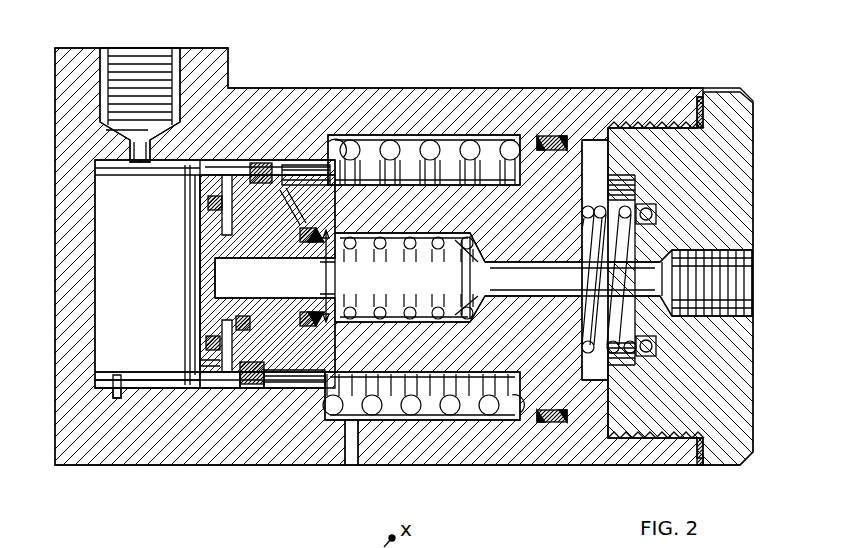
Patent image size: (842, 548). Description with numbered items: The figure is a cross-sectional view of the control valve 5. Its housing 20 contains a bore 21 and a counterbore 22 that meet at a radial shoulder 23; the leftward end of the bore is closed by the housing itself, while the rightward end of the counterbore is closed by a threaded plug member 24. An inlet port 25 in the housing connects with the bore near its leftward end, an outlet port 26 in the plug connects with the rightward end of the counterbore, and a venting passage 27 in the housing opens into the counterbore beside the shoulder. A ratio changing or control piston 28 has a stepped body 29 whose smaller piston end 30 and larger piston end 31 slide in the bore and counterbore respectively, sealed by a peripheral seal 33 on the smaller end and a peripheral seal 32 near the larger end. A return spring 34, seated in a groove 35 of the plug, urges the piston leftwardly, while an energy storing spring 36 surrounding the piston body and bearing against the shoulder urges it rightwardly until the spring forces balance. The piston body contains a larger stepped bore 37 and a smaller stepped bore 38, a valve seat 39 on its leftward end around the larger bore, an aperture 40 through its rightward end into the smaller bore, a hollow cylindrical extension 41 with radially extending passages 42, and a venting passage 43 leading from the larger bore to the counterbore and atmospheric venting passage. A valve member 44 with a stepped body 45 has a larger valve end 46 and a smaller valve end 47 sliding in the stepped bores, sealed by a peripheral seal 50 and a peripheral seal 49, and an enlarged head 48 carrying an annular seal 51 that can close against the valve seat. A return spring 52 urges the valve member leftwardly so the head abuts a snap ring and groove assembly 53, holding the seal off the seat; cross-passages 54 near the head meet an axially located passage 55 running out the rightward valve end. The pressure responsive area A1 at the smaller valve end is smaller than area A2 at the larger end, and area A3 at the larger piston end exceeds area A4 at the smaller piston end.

The control valve 5 is at (466, 60).
The housing 20 is at (98, 62).
The bore 21 is at (117, 392).
The counterbore 22 is at (462, 420).
The radial shoulder 23 is at (300, 398).
The plug member 24 is at (720, 164).
The inlet port 25 is at (177, 54).
The outlet port 26 is at (752, 316).
The venting passage 27 is at (356, 462).
The control piston 28 is at (519, 438).
The stepped body 29 is at (505, 348).
The smaller piston end 30 is at (288, 163).
The larger piston end 31 is at (558, 184).
The peripheral seal 32 is at (552, 426).
The peripheral seal 33 is at (258, 152).
The return spring 34 is at (646, 356).
The groove 35 is at (658, 212).
The energy storing spring 36 is at (430, 145).
The larger stepped bore 37 is at (300, 206).
The smaller stepped bore 38 is at (425, 238).
The valve seat 39 is at (224, 203).
The aperture 40 is at (546, 276).
The hollow cylindrical extension 41 is at (215, 166).
The radially extending passages 42 is at (220, 388).
The venting passage 43 is at (286, 388).
The valve member 44 is at (180, 273).
The stepped body 45 is at (315, 332).
The larger valve end 46 is at (240, 250).
The smaller valve end 47 is at (345, 305).
The enlarged head 48 is at (205, 312).
The peripheral seal 49 is at (318, 228).
The peripheral seal 50 is at (250, 350).
The annular seal 51 is at (206, 342).
The return spring 52 is at (418, 322).
The snap ring and groove assembly 53 is at (200, 362).
The cross-passages 54 is at (225, 230).
The axially located passage 55 is at (305, 283).
The effective fluid pressure responsive area A1 is at (343, 276).
The effective fluid pressure responsive area A2 is at (237, 275).
The effective fluid pressure responsive area A3 is at (547, 124).
The effective fluid pressure responsive area A4 is at (236, 400).